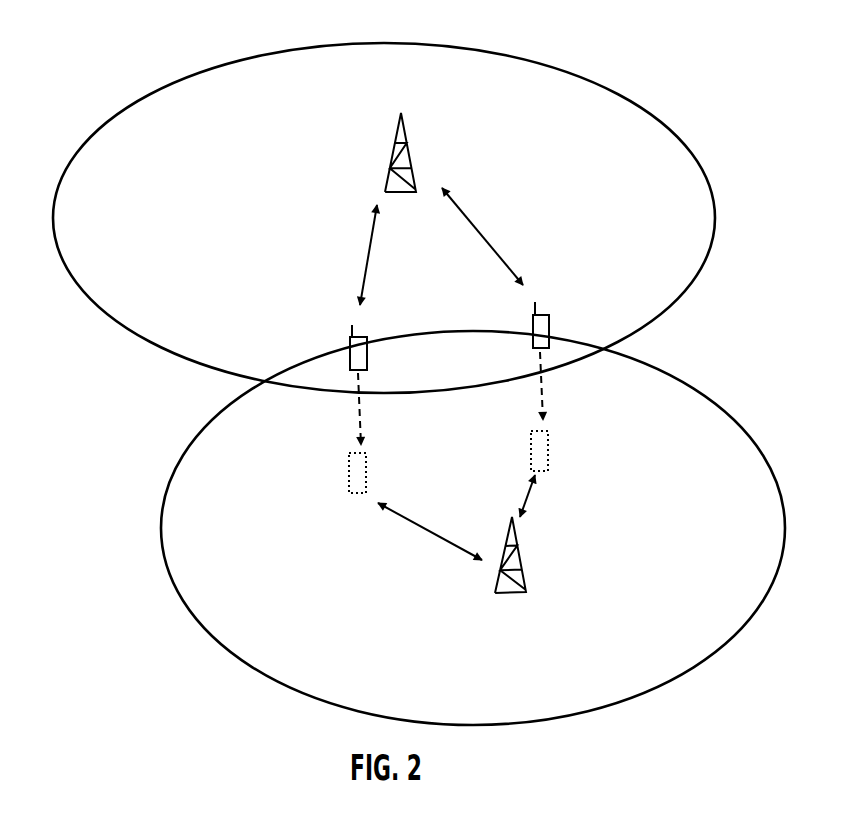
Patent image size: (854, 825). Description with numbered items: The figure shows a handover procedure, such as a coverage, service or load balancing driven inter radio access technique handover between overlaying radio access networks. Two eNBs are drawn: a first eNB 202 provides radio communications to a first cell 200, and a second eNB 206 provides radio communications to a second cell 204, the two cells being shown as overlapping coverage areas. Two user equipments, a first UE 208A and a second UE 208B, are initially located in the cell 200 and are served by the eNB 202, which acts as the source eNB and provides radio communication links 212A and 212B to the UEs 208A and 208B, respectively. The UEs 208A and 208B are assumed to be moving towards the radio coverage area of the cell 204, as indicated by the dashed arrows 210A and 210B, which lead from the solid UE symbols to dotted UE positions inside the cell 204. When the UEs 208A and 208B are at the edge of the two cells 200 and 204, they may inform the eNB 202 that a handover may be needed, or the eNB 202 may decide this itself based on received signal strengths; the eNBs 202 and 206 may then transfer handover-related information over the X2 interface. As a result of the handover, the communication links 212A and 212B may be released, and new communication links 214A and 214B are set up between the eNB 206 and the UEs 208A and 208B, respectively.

The cell 200 is at (678, 133).
The cell 204 is at (685, 383).
The eNB 202 is at (402, 123).
The eNB 206 is at (520, 594).
The UE 208A is at (350, 345).
The UE 208B is at (549, 320).
The dashed arrow 210A is at (358, 407).
The dashed arrow 210B is at (543, 395).
The radio communication link 212A is at (367, 257).
The radio communication link 212B is at (488, 240).
The new communication link 214A is at (458, 547).
The new communication link 214B is at (528, 502).